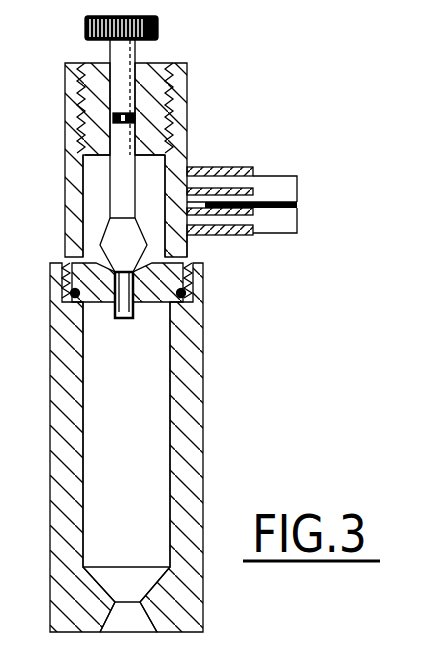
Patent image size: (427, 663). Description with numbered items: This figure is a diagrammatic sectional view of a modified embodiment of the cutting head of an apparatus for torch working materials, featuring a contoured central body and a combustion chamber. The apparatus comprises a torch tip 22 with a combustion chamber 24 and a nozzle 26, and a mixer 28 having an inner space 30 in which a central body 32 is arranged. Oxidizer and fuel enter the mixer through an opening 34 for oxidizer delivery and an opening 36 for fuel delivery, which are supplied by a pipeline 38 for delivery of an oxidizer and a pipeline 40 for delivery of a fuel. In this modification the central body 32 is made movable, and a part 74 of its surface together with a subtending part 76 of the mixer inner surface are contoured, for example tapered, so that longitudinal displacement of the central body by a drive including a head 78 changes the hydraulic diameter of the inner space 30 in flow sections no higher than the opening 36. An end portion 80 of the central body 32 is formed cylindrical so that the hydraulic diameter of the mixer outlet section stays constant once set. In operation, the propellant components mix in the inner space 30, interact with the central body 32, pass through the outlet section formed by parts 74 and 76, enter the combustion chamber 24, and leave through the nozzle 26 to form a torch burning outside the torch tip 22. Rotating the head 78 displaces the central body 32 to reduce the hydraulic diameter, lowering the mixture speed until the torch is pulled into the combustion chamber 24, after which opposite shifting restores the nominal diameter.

The torch tip 22 is at (193, 407).
The combustion chamber 24 is at (157, 467).
The nozzle 26 is at (133, 587).
The mixer 28 is at (177, 108).
The inner space 30 is at (147, 173).
The central body 32 is at (110, 190).
The opening for oxidizer delivery 34 is at (192, 165).
The opening for fuel delivery 36 is at (190, 245).
The pipeline for delivery of an oxidizer 38 is at (282, 184).
The pipeline for delivery of a fuel 40 is at (293, 222).
The part of central body surface 74 is at (143, 283).
The subtending part of the mixer inner surface 76 is at (155, 292).
The head 78 is at (160, 30).
The end portion 80 is at (115, 298).